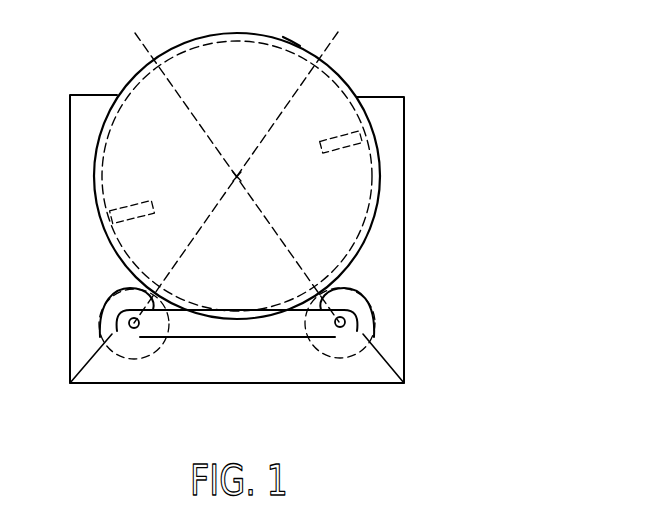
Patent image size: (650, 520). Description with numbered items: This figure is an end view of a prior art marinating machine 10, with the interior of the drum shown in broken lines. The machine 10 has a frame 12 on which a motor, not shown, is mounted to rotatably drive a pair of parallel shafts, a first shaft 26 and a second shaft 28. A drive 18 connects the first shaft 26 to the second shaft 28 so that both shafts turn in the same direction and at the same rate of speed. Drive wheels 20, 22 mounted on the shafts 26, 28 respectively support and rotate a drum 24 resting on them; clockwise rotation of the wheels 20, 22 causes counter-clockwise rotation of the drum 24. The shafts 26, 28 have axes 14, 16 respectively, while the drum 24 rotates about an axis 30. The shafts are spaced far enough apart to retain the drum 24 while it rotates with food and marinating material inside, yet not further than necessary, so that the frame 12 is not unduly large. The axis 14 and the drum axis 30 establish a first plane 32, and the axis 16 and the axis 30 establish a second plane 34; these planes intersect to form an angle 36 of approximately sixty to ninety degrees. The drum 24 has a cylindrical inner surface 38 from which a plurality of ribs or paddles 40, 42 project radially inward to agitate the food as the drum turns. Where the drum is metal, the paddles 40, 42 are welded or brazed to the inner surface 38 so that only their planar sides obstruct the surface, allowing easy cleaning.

The marinating machine 10 is at (276, 211).
The frame 12 is at (404, 353).
The axis 14 is at (125, 323).
The axis 16 is at (352, 321).
The drive 18 is at (196, 338).
The drive wheel 20 is at (103, 307).
The drive wheel 22 is at (373, 304).
The drum 24 is at (108, 112).
The first shaft 26 is at (136, 328).
The second shaft 28 is at (338, 330).
The axis 30 is at (240, 177).
The first plane 32 is at (280, 116).
The second plane 34 is at (176, 88).
The angle 36 is at (285, 254).
The cylindrical inner surface 38 is at (296, 57).
The paddle 40 is at (147, 200).
The paddle 42 is at (326, 152).